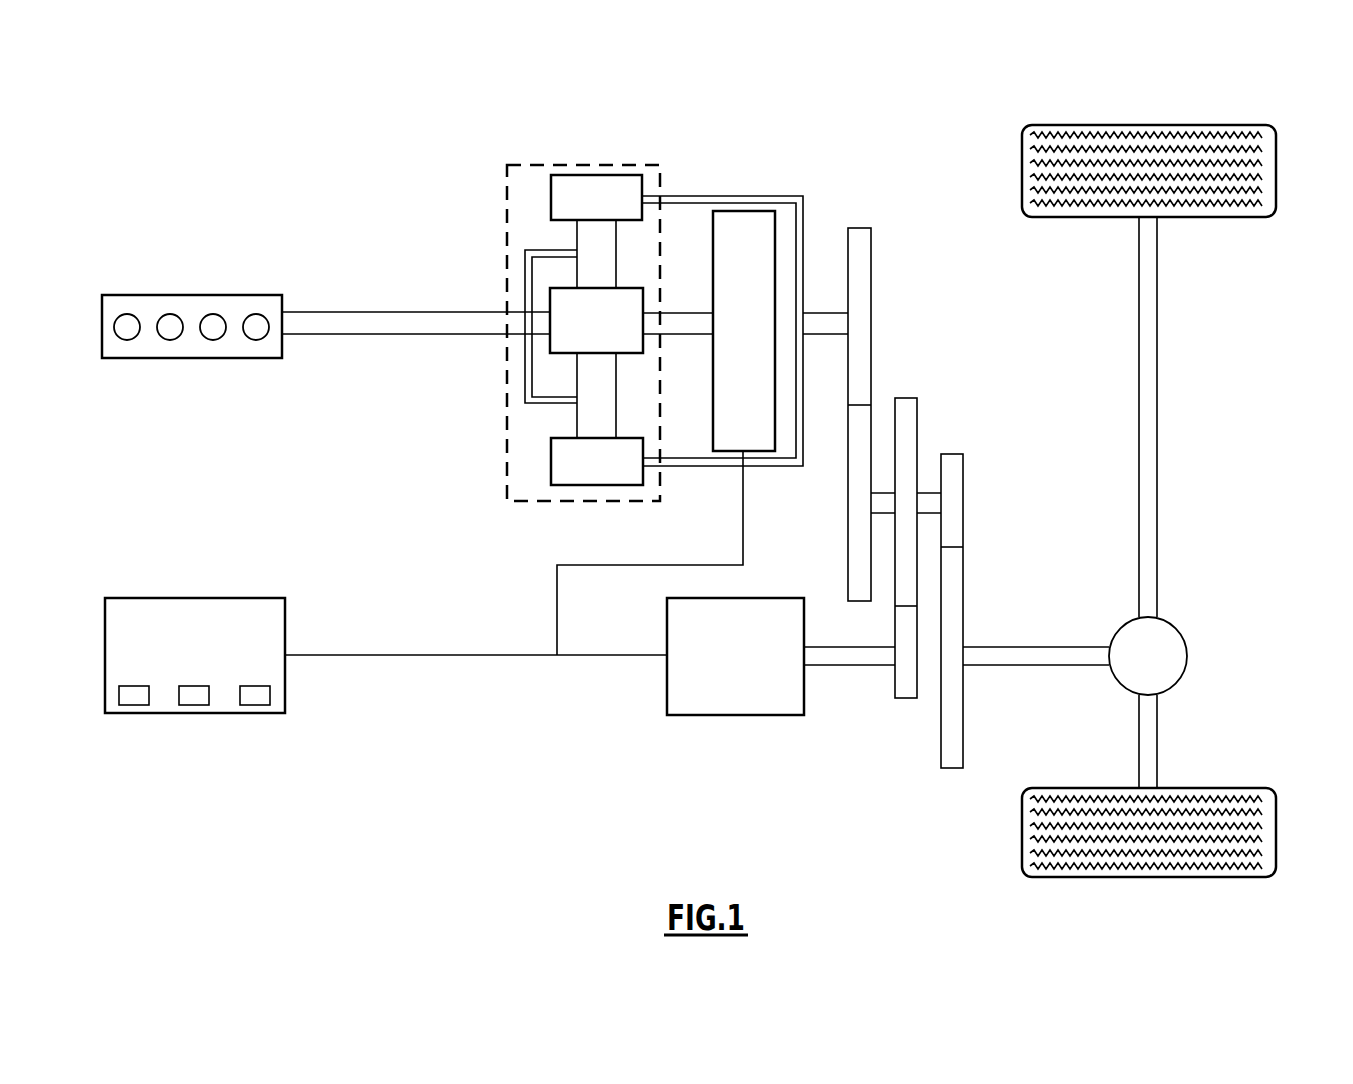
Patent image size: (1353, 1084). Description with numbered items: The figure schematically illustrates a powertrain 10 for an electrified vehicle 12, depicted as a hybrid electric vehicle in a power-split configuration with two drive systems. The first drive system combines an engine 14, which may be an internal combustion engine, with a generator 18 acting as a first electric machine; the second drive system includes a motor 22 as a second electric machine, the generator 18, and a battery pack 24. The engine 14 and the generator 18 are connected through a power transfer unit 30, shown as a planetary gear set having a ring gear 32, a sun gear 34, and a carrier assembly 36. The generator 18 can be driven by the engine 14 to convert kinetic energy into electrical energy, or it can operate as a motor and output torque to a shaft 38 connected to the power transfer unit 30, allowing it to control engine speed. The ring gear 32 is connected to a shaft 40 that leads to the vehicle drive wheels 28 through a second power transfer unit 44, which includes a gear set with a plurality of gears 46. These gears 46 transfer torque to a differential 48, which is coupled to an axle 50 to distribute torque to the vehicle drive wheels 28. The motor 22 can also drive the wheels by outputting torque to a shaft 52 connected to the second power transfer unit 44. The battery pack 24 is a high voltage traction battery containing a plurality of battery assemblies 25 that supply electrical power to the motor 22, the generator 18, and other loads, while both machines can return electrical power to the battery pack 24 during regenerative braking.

The powertrain 10 is at (346, 190).
The electrified vehicle 12 is at (768, 117).
The engine 14 is at (121, 295).
The generator 18 is at (722, 211).
The motor 22 is at (805, 697).
The battery pack 24 is at (368, 654).
The battery assemblies 25 is at (149, 695).
The vehicle drive wheels 28 is at (1276, 830).
The power transfer unit 30 is at (548, 343).
The ring gear 32 is at (551, 195).
The sun gear 34 is at (550, 296).
The carrier assembly 36 is at (525, 383).
The shaft 38 is at (678, 313).
The shaft 40 is at (834, 292).
The second power transfer unit 44 is at (946, 498).
The gears 46 is at (871, 365).
The differential 48 is at (1180, 678).
The axle 50 is at (1157, 405).
The shaft 52 is at (860, 665).